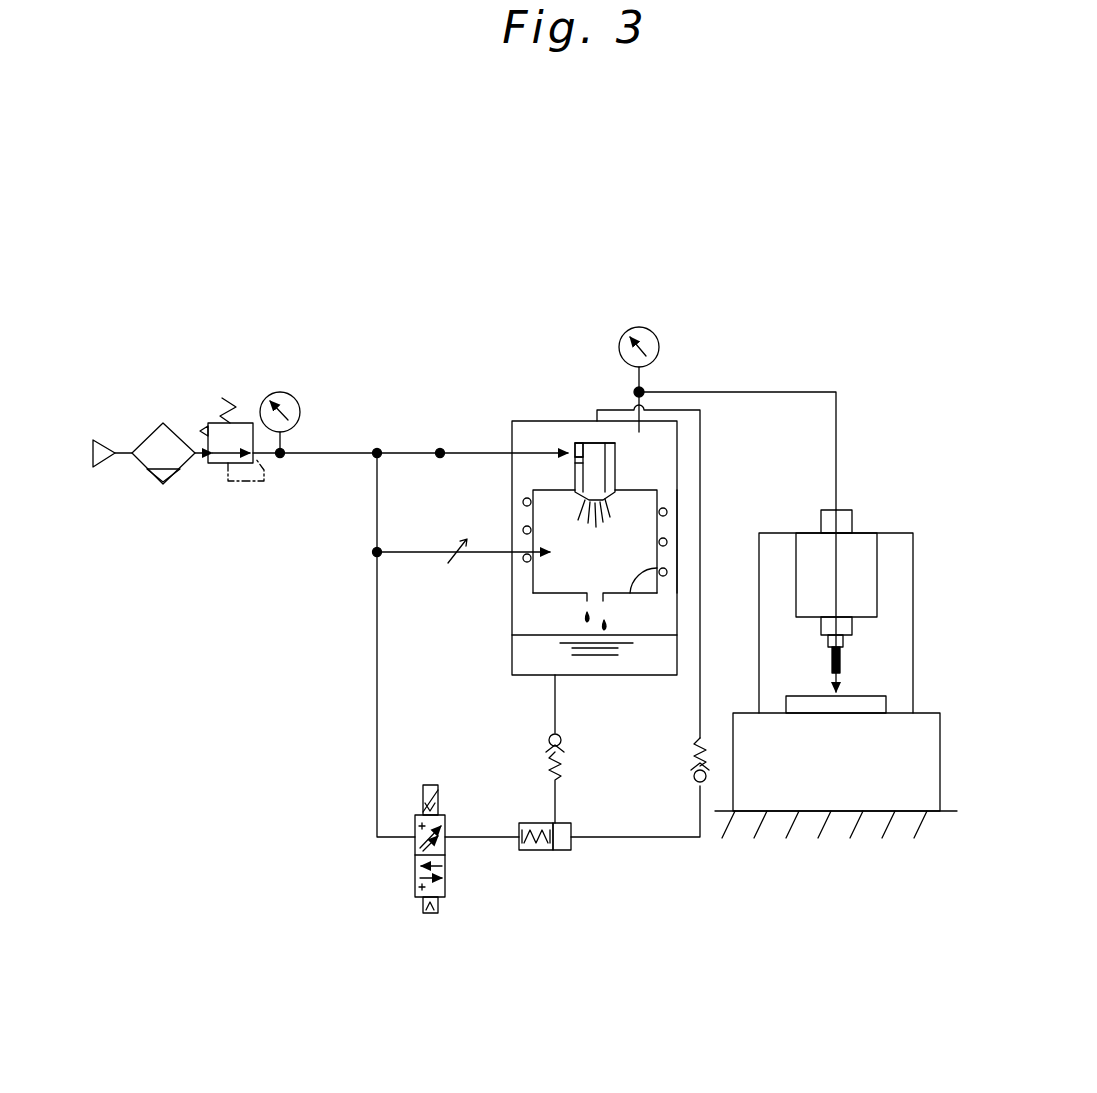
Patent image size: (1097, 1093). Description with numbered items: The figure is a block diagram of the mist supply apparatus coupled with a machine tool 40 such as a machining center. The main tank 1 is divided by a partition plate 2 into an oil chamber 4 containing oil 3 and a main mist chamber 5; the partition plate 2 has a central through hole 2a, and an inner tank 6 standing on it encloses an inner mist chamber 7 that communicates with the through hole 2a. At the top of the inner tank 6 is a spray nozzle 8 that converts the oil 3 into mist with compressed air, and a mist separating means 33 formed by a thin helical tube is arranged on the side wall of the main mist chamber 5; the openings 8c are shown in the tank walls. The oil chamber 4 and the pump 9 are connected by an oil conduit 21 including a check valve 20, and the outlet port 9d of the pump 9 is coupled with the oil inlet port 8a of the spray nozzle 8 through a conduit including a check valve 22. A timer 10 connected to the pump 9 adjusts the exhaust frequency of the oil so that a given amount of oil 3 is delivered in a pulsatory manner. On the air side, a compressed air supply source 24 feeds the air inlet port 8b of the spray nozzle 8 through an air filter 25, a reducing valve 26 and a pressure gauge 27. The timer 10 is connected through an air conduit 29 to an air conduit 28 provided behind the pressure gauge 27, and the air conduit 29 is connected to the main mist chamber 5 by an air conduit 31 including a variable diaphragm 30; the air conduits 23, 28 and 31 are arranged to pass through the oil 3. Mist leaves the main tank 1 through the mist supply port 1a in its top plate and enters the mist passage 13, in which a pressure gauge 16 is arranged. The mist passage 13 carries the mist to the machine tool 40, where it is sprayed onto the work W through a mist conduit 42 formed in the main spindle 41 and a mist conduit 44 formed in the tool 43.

The main tank 1 is at (679, 424).
The mist supply port 1a is at (642, 418).
The partition plate 2 is at (660, 578).
The through hole 2a is at (595, 598).
The oil 3 is at (635, 648).
The oil chamber 4 is at (545, 490).
The main mist chamber 5 is at (680, 516).
The inner tank 6 is at (612, 513).
The inner mist chamber 7 is at (542, 582).
The spray nozzle 8 is at (608, 463).
The oil inlet port 8a is at (597, 440).
The air inlet port 8b is at (574, 457).
The holes 8c is at (523, 530).
The pump 9 is at (537, 850).
The outlet port 9d is at (565, 850).
The timer 10 is at (415, 858).
The mist passage 13 is at (805, 392).
The pressure gauge 16 is at (639, 327).
The check valve 20 is at (548, 762).
The oil conduit 21 is at (557, 710).
The check valve 22 is at (693, 776).
The air conduit 23 is at (653, 839).
The compressed air supply source 24 is at (110, 440).
The air filter 25 is at (163, 432).
The reducing valve 26 is at (224, 398).
The pressure gauge 27 is at (283, 392).
The air conduit 28 is at (440, 453).
The air conduit 29 is at (377, 770).
The variable diaphragm 30 is at (448, 562).
The air conduit 31 is at (395, 551).
The mist separating means 33 is at (523, 500).
The machine tool 40 is at (884, 531).
The main spindle 41 is at (879, 580).
The mist conduit 42 is at (838, 562).
The tool 43 is at (845, 655).
The mist conduit 44 is at (845, 678).
The work W is at (873, 707).